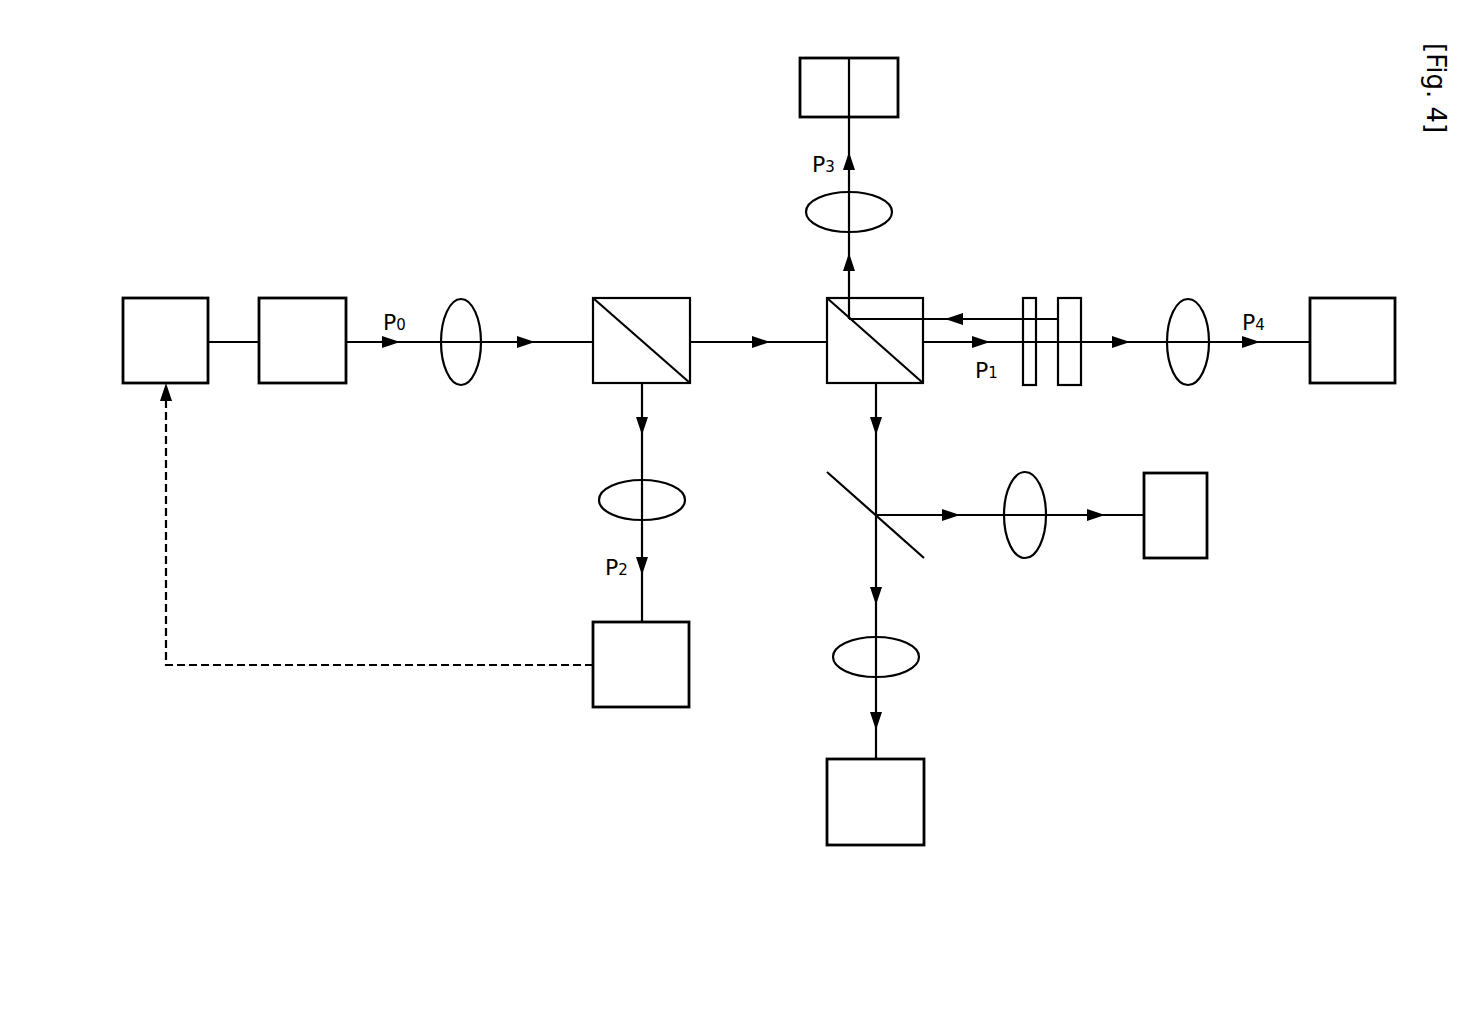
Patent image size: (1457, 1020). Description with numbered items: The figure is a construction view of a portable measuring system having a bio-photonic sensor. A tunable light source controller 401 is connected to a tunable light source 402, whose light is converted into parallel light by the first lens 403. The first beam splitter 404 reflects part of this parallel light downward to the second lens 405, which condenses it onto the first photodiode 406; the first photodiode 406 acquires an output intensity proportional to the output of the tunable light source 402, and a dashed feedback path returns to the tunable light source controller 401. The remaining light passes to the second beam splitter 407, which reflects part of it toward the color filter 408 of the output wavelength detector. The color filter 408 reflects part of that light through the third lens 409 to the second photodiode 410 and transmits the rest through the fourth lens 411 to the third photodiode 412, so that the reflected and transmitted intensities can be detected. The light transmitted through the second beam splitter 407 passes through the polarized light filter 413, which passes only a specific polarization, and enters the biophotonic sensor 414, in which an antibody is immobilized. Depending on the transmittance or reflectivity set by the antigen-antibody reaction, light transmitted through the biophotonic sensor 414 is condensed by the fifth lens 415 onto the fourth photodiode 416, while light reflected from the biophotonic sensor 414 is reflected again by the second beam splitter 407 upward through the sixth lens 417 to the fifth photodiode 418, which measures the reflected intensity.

The tunable light source controller 401 is at (165, 298).
The tunable light source 402 is at (298, 298).
The first lens 403 is at (461, 298).
The first beam splitter 404 is at (640, 298).
The second lens 405 is at (598, 498).
The first photodiode 406 is at (593, 633).
The second beam splitter 407 is at (923, 370).
The color filter 408 is at (848, 493).
The third lens 409 is at (1038, 550).
The second photodiode 410 is at (1207, 515).
The fourth lens 411 is at (919, 654).
The third photodiode 412 is at (924, 800).
The polarized light filter 413 is at (1028, 298).
The biophotonic sensor 414 is at (1070, 298).
The fifth lens 415 is at (1188, 298).
The fourth photodiode 416 is at (1350, 298).
The sixth lens 417 is at (892, 212).
The fifth photodiode 418 is at (898, 85).